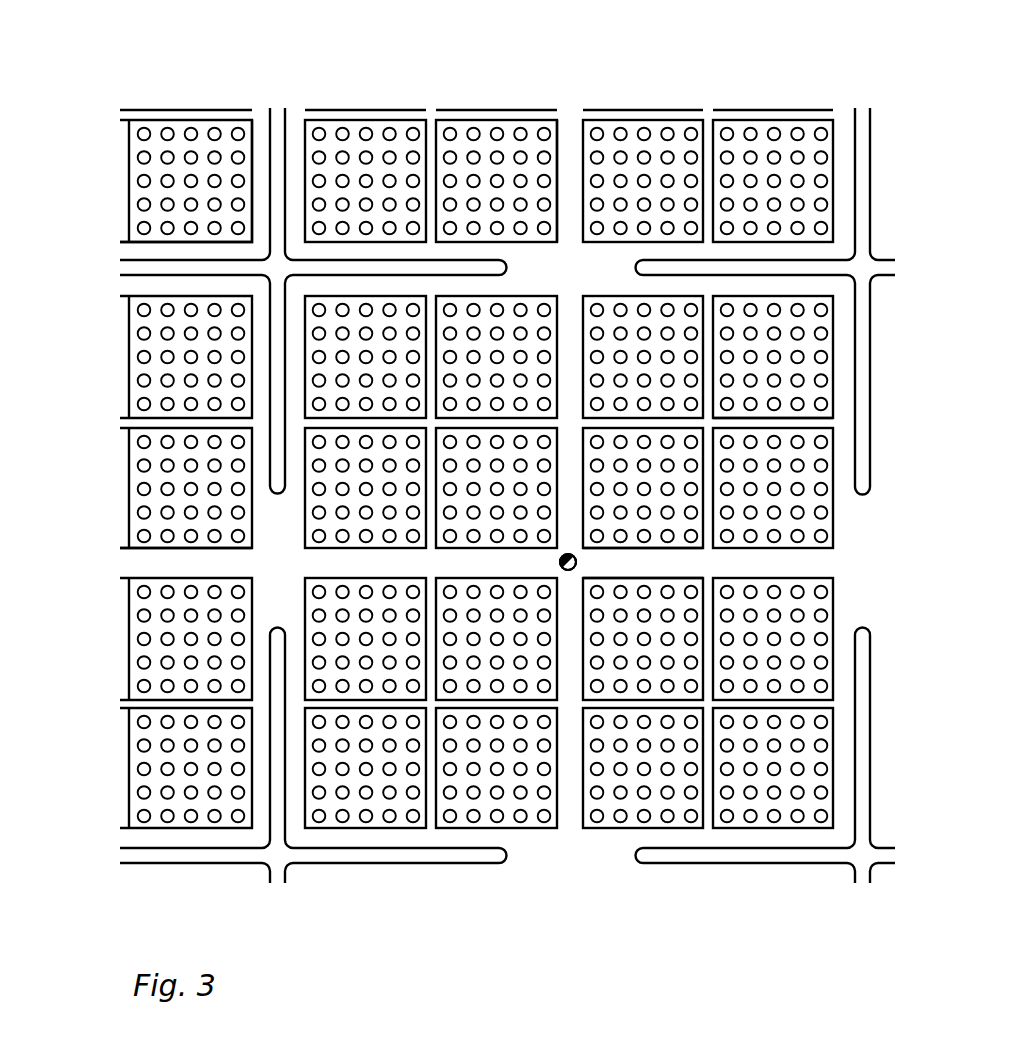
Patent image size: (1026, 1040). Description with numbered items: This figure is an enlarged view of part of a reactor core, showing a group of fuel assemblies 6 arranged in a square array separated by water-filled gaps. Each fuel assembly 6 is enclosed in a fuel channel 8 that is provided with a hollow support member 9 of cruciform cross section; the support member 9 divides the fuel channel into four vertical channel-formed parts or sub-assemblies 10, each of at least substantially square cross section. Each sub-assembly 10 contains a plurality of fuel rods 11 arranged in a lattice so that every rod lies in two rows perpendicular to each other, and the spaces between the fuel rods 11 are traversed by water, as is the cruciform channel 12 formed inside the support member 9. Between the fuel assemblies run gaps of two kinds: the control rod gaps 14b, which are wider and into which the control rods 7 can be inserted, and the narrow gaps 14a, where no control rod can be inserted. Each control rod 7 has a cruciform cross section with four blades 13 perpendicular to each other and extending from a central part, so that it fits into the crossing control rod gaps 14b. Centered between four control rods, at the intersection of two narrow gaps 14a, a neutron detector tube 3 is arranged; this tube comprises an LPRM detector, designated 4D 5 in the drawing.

The neutron detector tube 3 is at (578, 561).
The LPRM detector 4D is at (530, 563).
The LPRM detector 5 is at (559, 561).
The fuel assembly 6 is at (836, 587).
The control rod 7 is at (289, 123).
The fuel channel 8 is at (600, 296).
The support member 9 is at (809, 420).
The sub-assembly 10 is at (669, 552).
The fuel rod 11 is at (617, 819).
The cruciform channel 12 is at (705, 304).
The blade 13 is at (279, 498).
The narrow gap 14a is at (570, 127).
The control rod gap 14b is at (258, 123).